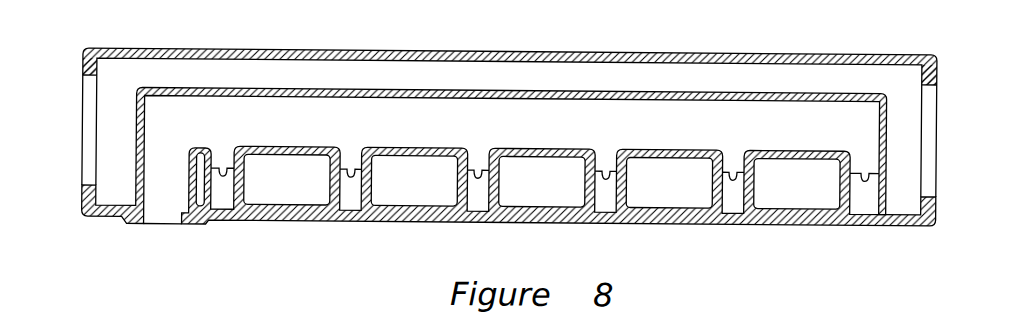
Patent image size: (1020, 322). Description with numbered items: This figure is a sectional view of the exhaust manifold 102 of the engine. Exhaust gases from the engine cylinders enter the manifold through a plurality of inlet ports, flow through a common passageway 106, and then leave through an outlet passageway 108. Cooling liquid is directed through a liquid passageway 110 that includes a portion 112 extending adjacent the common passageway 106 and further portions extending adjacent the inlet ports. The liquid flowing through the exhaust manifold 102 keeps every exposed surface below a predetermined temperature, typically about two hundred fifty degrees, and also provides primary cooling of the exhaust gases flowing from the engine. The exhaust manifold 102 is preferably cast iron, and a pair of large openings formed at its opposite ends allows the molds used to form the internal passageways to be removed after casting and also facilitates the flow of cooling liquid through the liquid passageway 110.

The exhaust manifold 102 is at (447, 226).
The common passageway 106 is at (430, 120).
The outlet passageway 108 is at (183, 224).
The liquid passageway 110 is at (132, 133).
The portion of the liquid passageway 112 is at (526, 82).